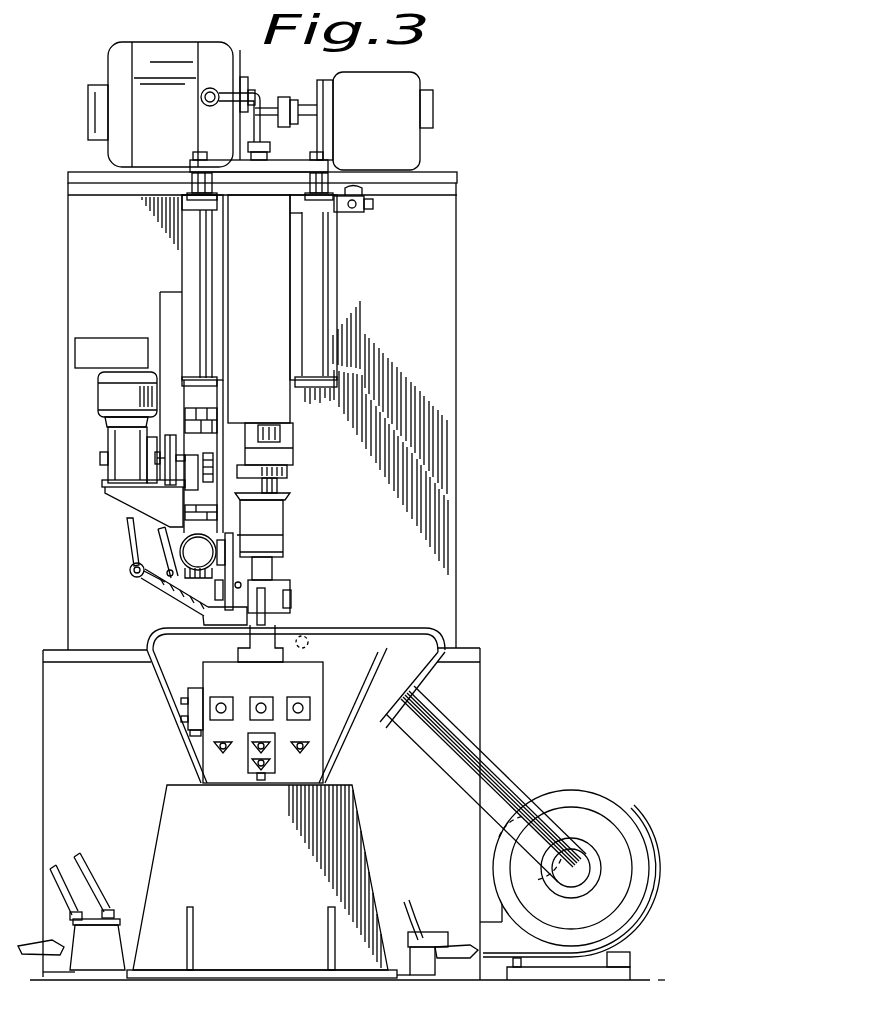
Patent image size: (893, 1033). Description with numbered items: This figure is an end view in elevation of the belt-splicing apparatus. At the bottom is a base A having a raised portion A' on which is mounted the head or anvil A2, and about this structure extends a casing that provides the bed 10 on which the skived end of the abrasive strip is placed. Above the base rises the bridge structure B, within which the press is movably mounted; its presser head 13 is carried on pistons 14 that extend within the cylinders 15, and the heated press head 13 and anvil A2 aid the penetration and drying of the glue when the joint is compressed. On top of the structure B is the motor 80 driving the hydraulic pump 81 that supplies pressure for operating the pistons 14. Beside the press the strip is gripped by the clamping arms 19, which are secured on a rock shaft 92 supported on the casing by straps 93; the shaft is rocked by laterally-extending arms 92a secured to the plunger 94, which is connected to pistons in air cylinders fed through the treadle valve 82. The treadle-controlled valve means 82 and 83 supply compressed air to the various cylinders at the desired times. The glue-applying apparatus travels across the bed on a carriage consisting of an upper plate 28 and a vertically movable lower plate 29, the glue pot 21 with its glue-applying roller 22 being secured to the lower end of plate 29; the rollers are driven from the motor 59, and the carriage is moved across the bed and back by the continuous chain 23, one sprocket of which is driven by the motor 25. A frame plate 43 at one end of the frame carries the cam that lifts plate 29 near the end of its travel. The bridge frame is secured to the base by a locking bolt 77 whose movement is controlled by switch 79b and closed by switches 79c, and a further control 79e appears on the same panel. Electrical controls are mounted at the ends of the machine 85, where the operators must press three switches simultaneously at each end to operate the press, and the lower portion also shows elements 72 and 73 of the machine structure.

The motor 80 is at (155, 53).
The hydraulic pump 81 is at (403, 80).
The bridge structure B is at (443, 297).
The upper plate 28 is at (230, 425).
The locking bolt 77 is at (257, 445).
The cylinders 15 is at (293, 444).
The pistons 14 is at (277, 488).
The presser head 13 is at (276, 536).
The lower plate 29 is at (237, 537).
The glue-applying roller 22 is at (287, 598).
The glue pot 21 is at (292, 598).
The frame plate 43 is at (187, 430).
The continuous chain 23 is at (212, 454).
The motor 25 is at (108, 445).
The straps 93 is at (132, 528).
The plunger 94 is at (170, 543).
The rock shaft 92 is at (130, 572).
The laterally-extending arms 92a is at (150, 573).
The clamping arms 19 is at (175, 597).
The motor 59 is at (215, 605).
The head or anvil A2 is at (248, 638).
The bed 10 is at (160, 632).
The raised portion A' is at (267, 722).
The machine ends 85 is at (297, 732).
The push button 79e is at (222, 706).
The switch 79b is at (262, 706).
The switches 79c is at (302, 708).
The base A is at (262, 881).
The treadle-controlled valve means 82 is at (98, 967).
The treadle-controlled valve means 83 is at (430, 928).
The arm 73 is at (500, 787).
The flywheel 72 is at (593, 812).